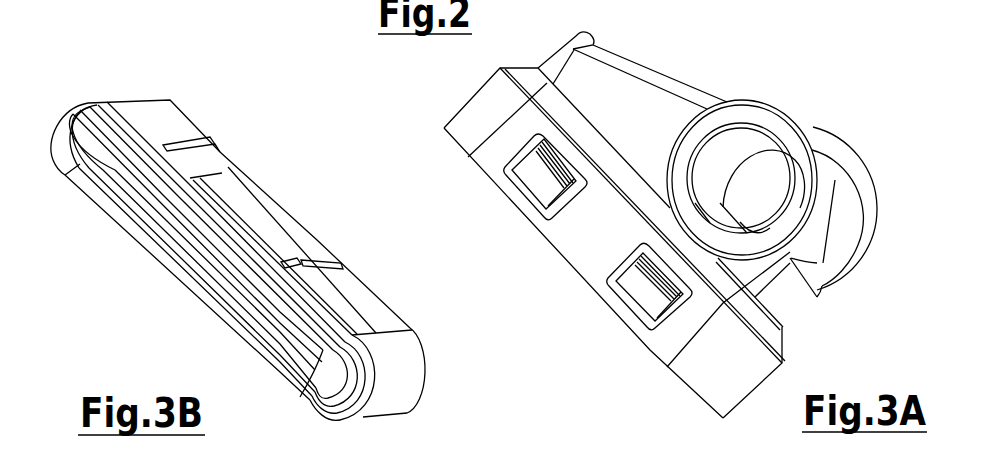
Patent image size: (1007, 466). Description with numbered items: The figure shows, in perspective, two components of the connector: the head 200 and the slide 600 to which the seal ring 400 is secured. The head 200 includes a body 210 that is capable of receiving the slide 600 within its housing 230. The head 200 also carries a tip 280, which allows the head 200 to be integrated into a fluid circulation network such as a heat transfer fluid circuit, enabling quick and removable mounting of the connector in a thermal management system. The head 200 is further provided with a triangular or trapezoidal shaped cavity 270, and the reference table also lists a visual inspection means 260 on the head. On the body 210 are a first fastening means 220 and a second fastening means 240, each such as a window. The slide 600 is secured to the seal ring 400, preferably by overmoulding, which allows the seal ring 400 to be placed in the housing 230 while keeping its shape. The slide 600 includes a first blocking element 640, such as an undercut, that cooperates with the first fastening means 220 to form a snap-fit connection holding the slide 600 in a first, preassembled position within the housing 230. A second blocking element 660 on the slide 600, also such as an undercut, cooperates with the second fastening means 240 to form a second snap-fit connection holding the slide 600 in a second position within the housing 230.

In FIG. 3A, the head 200 is at (713, 93).
In FIG. 3A, the body 210 is at (737, 365).
In FIG. 3A, the first fastening means 220 is at (547, 205).
In FIG. 3A, the housing 230 is at (615, 318).
In FIG. 3A, the second fastening means 240 is at (650, 335).
In FIG. 3A, the visual inspection means 260 is at (533, 176).
In FIG. 3A, the triangular or trapezoidal cavity 270 is at (603, 78).
In FIG. 3A, the tip 280 is at (780, 190).
In FIG. 3B, the seal ring 400 is at (205, 300).
In FIG. 3B, the slide 600 is at (372, 314).
In FIG. 3B, the first blocking element 640 is at (278, 260).
In FIG. 3B, the second blocking element 660 is at (205, 163).